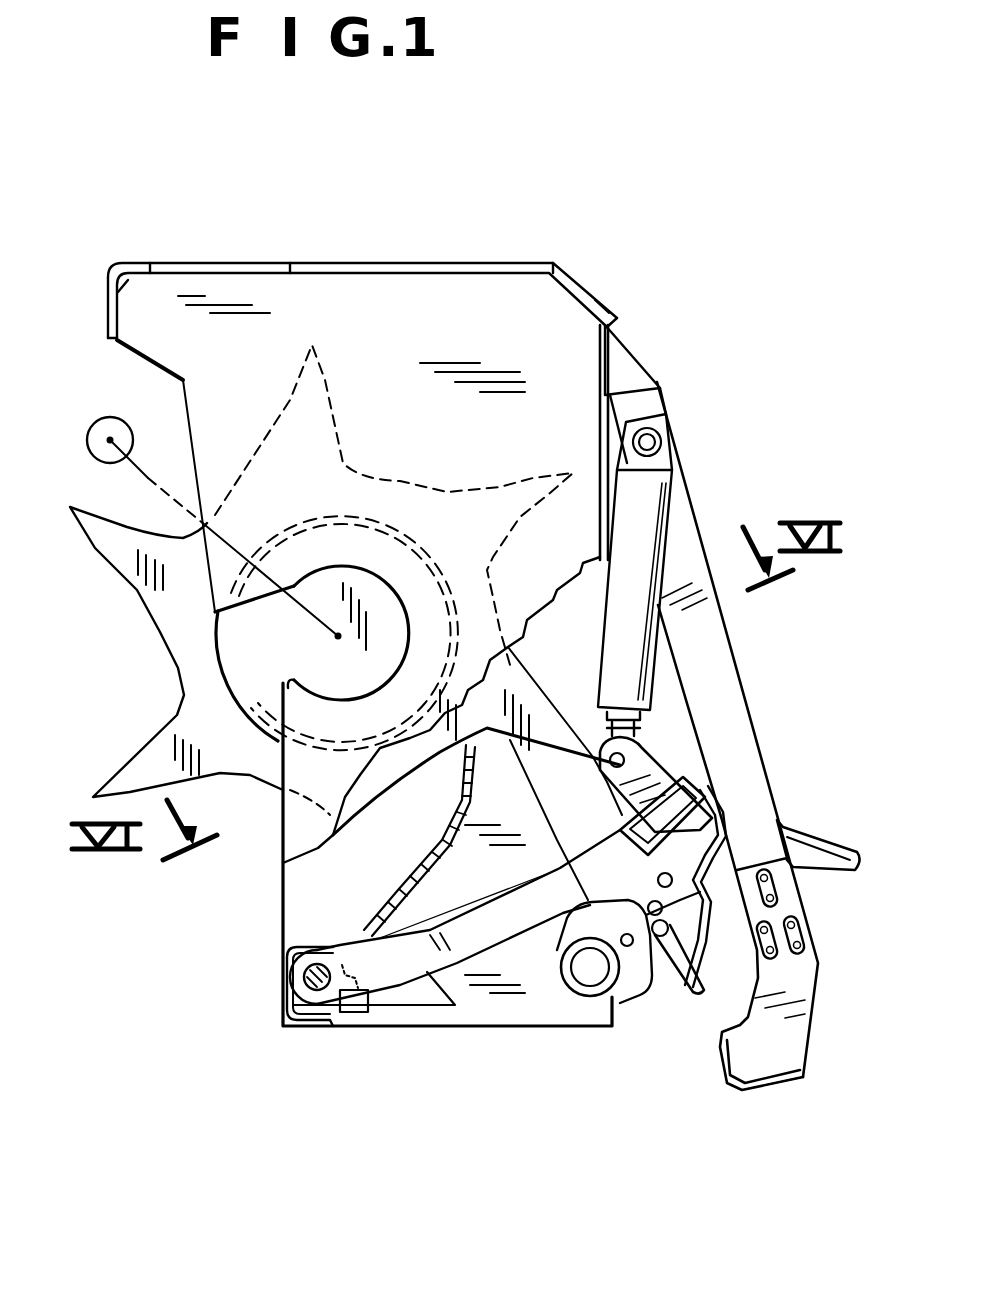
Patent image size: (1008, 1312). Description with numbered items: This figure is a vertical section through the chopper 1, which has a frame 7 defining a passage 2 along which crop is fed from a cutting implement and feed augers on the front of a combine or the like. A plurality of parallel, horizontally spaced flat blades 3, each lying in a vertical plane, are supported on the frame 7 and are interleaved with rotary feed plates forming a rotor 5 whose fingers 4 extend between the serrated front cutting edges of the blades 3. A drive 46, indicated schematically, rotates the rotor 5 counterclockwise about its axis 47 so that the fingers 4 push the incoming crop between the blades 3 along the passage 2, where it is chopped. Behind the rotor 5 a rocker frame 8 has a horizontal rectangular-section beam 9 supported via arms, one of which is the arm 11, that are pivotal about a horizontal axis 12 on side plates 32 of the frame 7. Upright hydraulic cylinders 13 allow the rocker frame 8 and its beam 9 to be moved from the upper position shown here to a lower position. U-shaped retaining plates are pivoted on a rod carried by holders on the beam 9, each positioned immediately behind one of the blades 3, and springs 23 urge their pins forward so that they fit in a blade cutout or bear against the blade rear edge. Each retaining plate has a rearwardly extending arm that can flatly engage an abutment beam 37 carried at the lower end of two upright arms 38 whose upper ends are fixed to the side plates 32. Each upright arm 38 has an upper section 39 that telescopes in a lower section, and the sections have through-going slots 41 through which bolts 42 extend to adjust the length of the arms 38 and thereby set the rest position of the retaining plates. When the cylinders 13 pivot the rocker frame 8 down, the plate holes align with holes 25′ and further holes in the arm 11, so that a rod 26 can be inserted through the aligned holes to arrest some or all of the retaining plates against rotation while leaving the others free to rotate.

The chopper 1 is at (260, 850).
The passage 2 is at (670, 700).
The blades 3 is at (480, 832).
The fingers 4 is at (468, 850).
The rotor 5 is at (207, 722).
The frame 7 is at (550, 263).
The rocker frame 8 is at (403, 957).
The beam 9 is at (707, 783).
The arm 11 is at (468, 904).
The horizontal axis 12 is at (305, 977).
The hydraulic cylinders 13 is at (637, 513).
The springs 23 is at (557, 977).
The holes 25′ is at (667, 927).
The rod 26 is at (693, 980).
The side plates 32 is at (553, 340).
The abutment beam 37 is at (720, 1063).
The upright arms 38 is at (833, 831).
The upper section 39 is at (670, 567).
The slots 41 is at (772, 883).
The bolts 42 is at (802, 932).
The drive 46 is at (110, 437).
The axis 47 is at (338, 638).